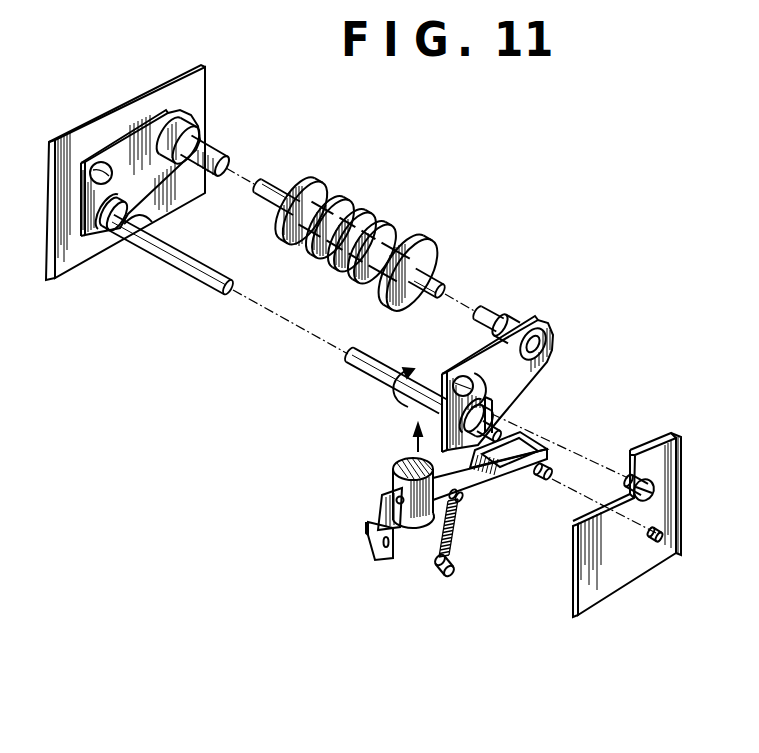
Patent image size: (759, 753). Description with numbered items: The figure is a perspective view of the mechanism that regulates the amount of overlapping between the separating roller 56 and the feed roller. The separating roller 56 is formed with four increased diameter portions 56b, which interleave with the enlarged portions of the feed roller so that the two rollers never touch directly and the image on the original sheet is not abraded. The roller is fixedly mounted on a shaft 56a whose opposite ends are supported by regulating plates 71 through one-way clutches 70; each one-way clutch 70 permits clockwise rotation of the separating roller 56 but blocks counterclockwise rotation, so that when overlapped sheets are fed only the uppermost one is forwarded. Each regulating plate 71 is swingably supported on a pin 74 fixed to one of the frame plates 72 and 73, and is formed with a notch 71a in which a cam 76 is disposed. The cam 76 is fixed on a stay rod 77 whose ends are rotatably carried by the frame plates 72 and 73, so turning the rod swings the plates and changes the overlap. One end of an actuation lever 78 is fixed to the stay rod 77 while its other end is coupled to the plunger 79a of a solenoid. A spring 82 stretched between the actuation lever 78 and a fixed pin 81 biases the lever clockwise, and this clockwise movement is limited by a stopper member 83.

The separating roller 56 is at (286, 255).
The shaft 56a is at (487, 306).
The increased diameter portions 56b is at (324, 188).
The one-way clutch 70 is at (190, 128).
The regulating plate 71 is at (133, 138).
The notch 71a is at (464, 376).
The frame plate 72 is at (633, 572).
The frame plate 73 is at (77, 261).
The pin 74 is at (99, 162).
The cam 76 is at (155, 224).
The stay rod 77 is at (361, 373).
The actuation lever 78 is at (511, 481).
The plunger 79a is at (388, 480).
The fixed pin 81 is at (450, 575).
The spring 82 is at (454, 540).
The stopper member 83 is at (388, 565).